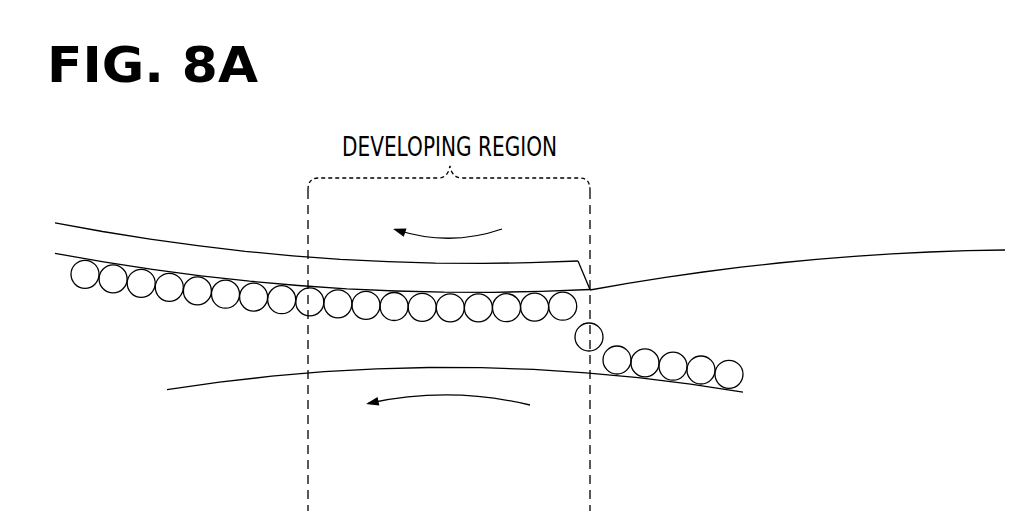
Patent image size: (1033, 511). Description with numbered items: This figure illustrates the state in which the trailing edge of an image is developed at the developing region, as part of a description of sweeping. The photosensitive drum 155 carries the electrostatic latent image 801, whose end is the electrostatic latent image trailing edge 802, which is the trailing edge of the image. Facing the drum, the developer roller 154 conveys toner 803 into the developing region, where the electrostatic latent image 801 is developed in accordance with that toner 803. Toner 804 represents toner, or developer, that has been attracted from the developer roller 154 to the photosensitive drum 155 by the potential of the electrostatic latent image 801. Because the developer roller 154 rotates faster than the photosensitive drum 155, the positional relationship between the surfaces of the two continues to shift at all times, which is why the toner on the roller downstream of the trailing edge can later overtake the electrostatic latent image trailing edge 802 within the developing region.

The electrostatic latent image 801 is at (168, 253).
The electrostatic latent image trailing edge 802 is at (592, 285).
The photosensitive drum 155 is at (741, 270).
The developer roller 154 is at (683, 385).
The toner 803 is at (744, 378).
The toner 804 is at (603, 337).